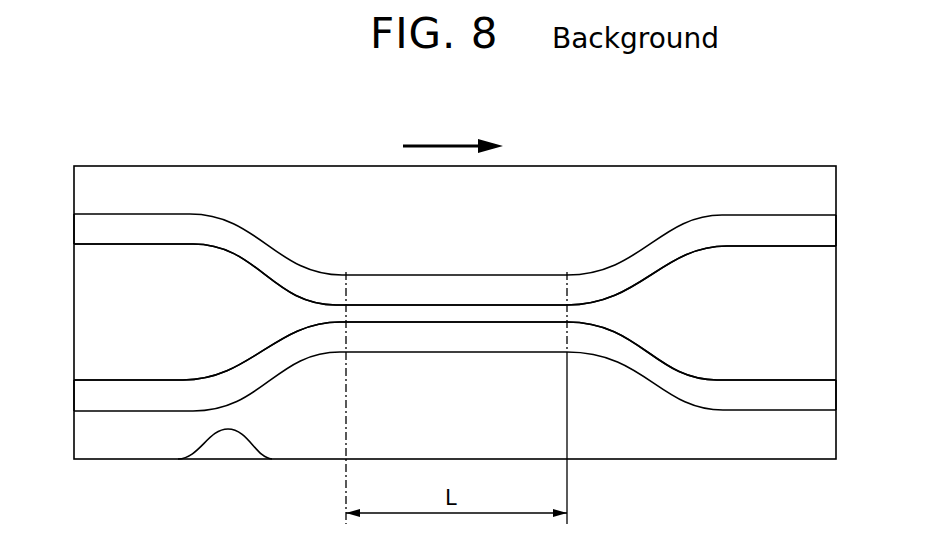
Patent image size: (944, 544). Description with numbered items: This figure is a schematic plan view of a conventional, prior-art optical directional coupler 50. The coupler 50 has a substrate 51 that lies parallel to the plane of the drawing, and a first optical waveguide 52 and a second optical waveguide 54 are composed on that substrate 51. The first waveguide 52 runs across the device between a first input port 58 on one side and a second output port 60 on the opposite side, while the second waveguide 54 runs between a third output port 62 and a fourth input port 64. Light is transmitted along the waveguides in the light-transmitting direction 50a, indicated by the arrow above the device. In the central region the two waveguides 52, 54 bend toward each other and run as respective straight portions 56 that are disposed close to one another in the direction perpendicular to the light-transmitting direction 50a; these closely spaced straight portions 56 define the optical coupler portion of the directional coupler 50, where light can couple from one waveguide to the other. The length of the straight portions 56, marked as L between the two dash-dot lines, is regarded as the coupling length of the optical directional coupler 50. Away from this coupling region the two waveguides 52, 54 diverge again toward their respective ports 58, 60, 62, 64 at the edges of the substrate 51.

The optical directional coupler 50 is at (619, 148).
The light-transmitting direction 50a is at (453, 135).
The substrate 51 is at (230, 444).
The first optical waveguide 52 is at (411, 262).
The second optical waveguide 54 is at (429, 368).
The straight portions 56 is at (520, 337).
The first input port 58 is at (74, 229).
The second output port 60 is at (836, 232).
The third output port 62 is at (836, 398).
The fourth input port 64 is at (74, 395).